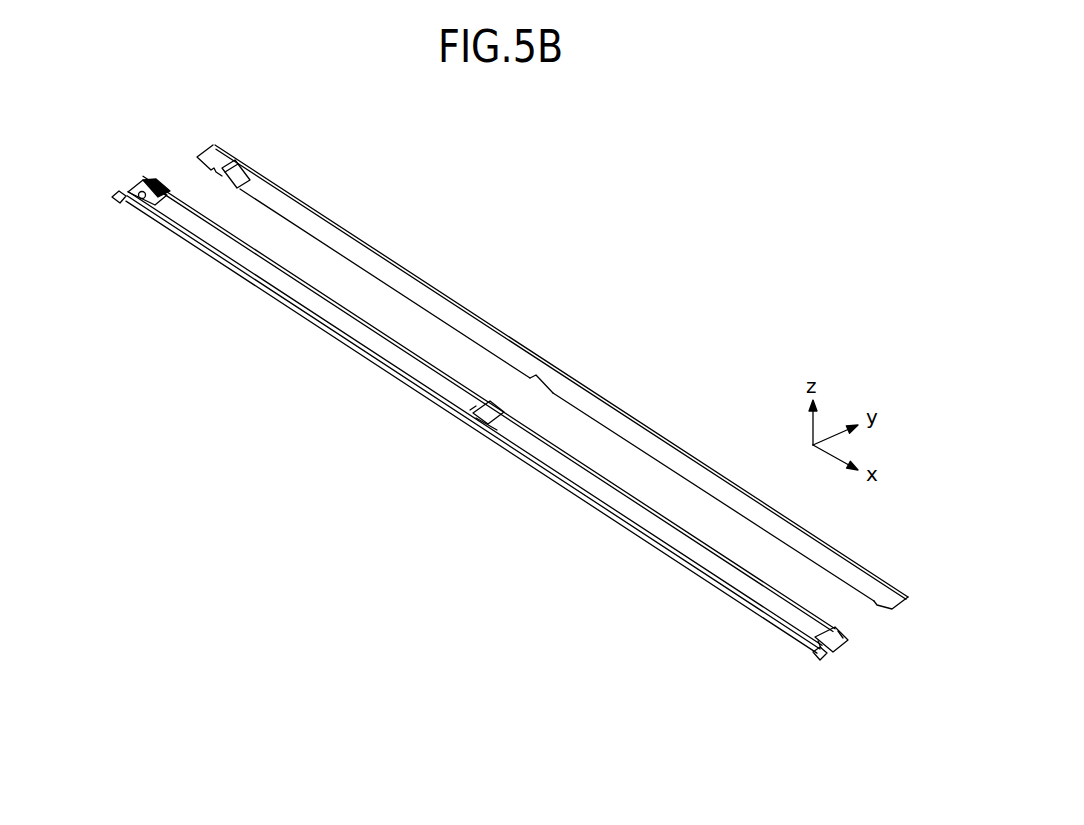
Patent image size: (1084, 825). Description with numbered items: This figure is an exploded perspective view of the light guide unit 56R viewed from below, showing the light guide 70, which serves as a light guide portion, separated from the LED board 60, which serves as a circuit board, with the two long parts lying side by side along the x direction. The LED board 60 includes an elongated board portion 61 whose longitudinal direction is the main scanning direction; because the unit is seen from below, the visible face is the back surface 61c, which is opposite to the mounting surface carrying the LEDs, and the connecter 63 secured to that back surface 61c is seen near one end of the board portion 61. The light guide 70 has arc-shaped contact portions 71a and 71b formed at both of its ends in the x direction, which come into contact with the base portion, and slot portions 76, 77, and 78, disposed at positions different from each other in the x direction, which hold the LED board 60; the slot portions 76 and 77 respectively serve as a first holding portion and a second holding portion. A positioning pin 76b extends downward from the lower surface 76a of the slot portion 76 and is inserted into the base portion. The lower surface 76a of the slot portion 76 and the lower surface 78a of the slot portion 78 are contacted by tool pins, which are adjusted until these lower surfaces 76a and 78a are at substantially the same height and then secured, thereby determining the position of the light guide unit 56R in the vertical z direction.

The light guide unit 56R is at (508, 419).
The LED board 60 is at (552, 367).
The board portion 61 is at (557, 395).
The back surface 61c is at (585, 402).
The connecter 63 is at (240, 178).
The light guide 70 is at (378, 390).
The contact portion 71a is at (118, 201).
The contact portion 71b is at (817, 656).
The slot portion 76 is at (157, 158).
The lower surface 76a is at (160, 189).
The positioning pin 76b is at (148, 190).
The slot portion 77 is at (473, 433).
The slot portion 78 is at (887, 687).
The lower surface 78a is at (838, 630).